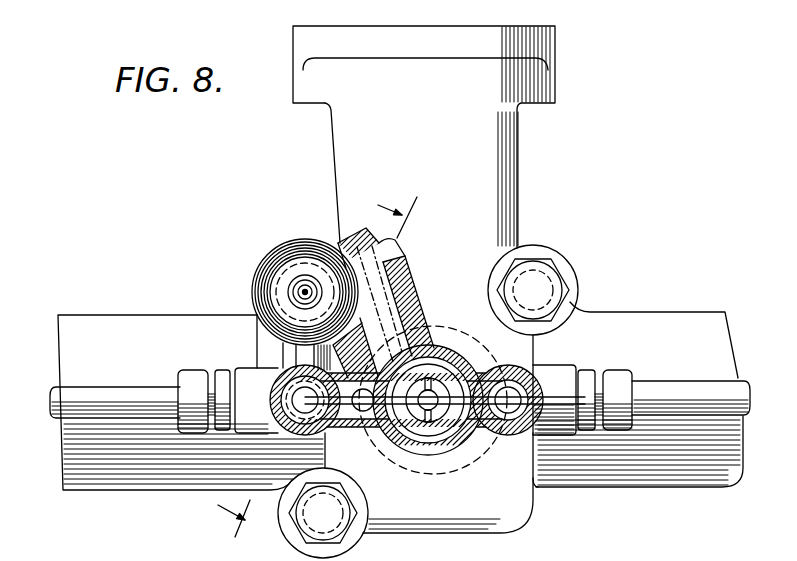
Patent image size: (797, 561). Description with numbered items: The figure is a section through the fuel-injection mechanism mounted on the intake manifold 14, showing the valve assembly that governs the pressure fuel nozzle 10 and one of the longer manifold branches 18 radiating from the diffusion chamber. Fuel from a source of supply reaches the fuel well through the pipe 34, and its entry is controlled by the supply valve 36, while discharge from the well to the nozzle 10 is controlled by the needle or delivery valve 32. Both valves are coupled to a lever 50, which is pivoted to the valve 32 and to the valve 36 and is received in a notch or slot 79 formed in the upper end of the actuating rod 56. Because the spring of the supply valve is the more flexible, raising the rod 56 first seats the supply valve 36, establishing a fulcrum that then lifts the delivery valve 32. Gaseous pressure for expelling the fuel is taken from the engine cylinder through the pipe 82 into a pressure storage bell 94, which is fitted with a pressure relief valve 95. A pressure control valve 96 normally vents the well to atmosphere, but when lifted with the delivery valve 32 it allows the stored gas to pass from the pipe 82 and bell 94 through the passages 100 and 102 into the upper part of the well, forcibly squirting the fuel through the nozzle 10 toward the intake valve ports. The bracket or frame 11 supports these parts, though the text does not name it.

The pressure fuel nozzle 10 is at (317, 367).
The frame bracket 11 is at (396, 246).
The intake manifold 14 is at (666, 318).
The longer branch 18 is at (222, 313).
The needle valve 32 is at (448, 432).
The pipe 34 is at (740, 381).
The supply valve 36 is at (500, 432).
The lever 50 is at (531, 335).
The actuating rod 56 is at (366, 411).
The notch or slot 79 is at (368, 430).
The pipe 82 is at (51, 389).
The pressure storage bell 94 is at (262, 281).
The pressure relief valve 95 is at (302, 289).
The valve 96 is at (283, 366).
The passage 100 is at (400, 306).
The passage 102 is at (403, 286).